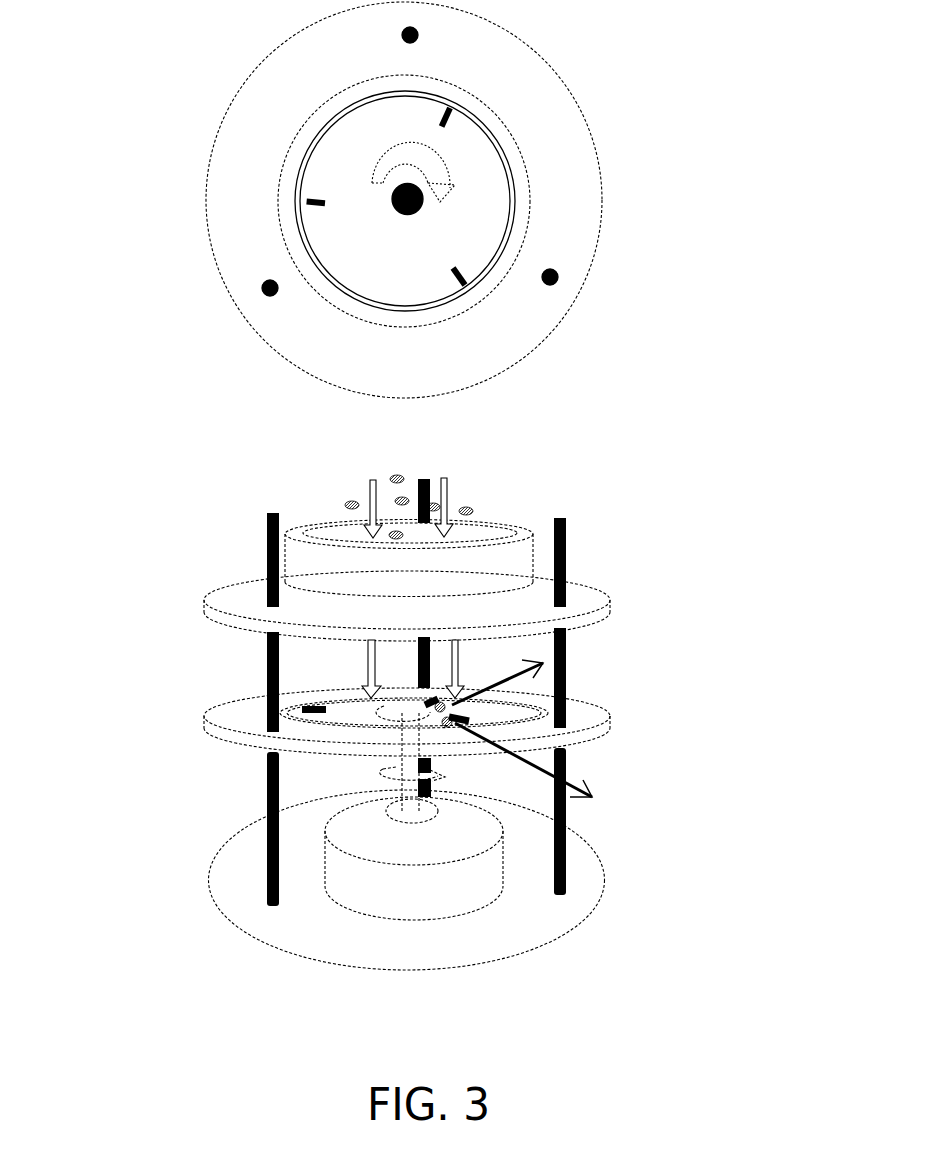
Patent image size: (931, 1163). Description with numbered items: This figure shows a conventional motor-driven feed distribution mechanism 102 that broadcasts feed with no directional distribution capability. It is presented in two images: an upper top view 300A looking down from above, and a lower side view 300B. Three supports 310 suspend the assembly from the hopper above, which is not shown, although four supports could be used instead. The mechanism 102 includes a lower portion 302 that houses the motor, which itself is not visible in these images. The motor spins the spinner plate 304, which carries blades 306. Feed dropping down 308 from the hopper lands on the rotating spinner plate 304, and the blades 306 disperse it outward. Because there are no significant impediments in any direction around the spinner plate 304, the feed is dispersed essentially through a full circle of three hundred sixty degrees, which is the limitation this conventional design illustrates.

The motor-driven feed distribution mechanism 102 is at (627, 83).
The top view 300A is at (813, 388).
The side view 300B is at (780, 915).
The lower portion 302 is at (205, 863).
The spinner plate 304 is at (360, 715).
The blades 306 is at (427, 118).
The feed dropping down 308 is at (482, 502).
The supports 310 is at (280, 518).